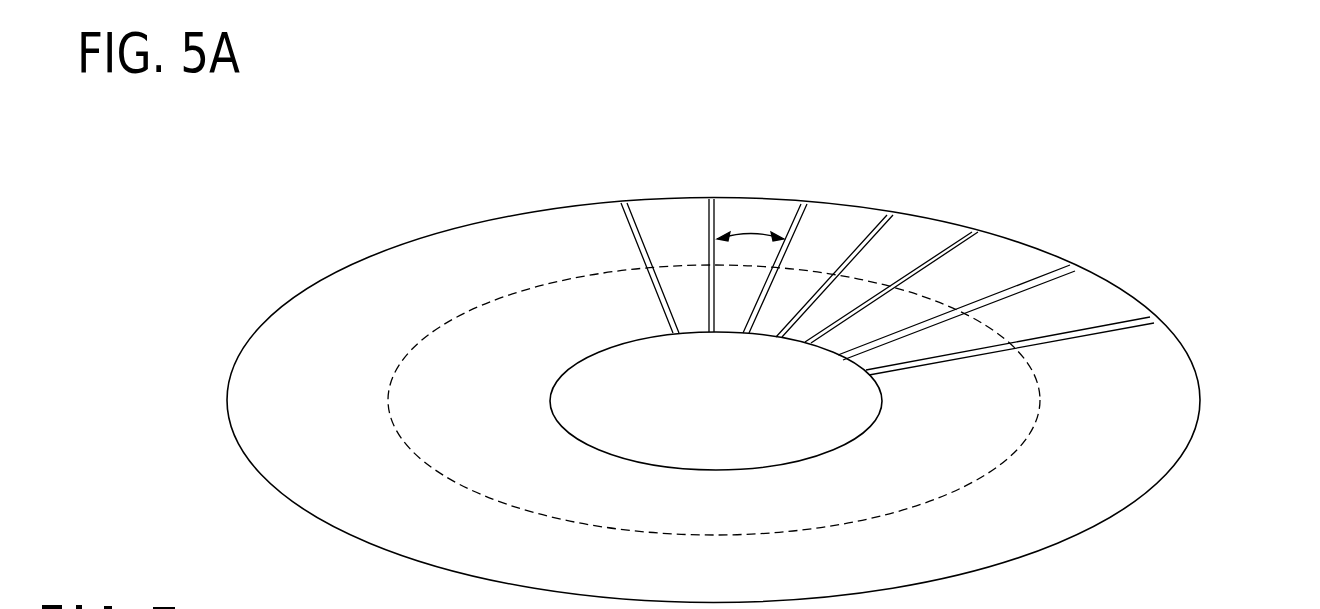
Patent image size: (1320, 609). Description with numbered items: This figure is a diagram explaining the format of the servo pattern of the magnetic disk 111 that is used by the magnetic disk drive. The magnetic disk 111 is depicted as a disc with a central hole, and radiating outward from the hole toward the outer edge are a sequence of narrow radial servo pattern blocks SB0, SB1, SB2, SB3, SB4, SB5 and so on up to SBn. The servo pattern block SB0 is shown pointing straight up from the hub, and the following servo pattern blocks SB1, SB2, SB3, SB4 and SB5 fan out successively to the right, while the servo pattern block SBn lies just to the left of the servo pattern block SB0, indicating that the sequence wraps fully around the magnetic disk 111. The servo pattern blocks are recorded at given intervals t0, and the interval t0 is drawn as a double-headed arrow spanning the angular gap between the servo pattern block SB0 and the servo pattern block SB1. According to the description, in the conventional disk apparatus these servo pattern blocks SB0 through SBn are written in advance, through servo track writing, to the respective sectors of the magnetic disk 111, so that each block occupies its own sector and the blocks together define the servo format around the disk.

The magnetic disk 111 is at (1201, 392).
The servo pattern block SBn is at (624, 221).
The servo pattern block SB0 is at (710, 221).
The servo pattern block SB1 is at (806, 221).
The servo pattern block SB2 is at (888, 233).
The servo pattern block SB3 is at (972, 248).
The servo pattern block SB4 is at (1066, 283).
The servo pattern block SB5 is at (1127, 330).
The interval t0 is at (745, 233).